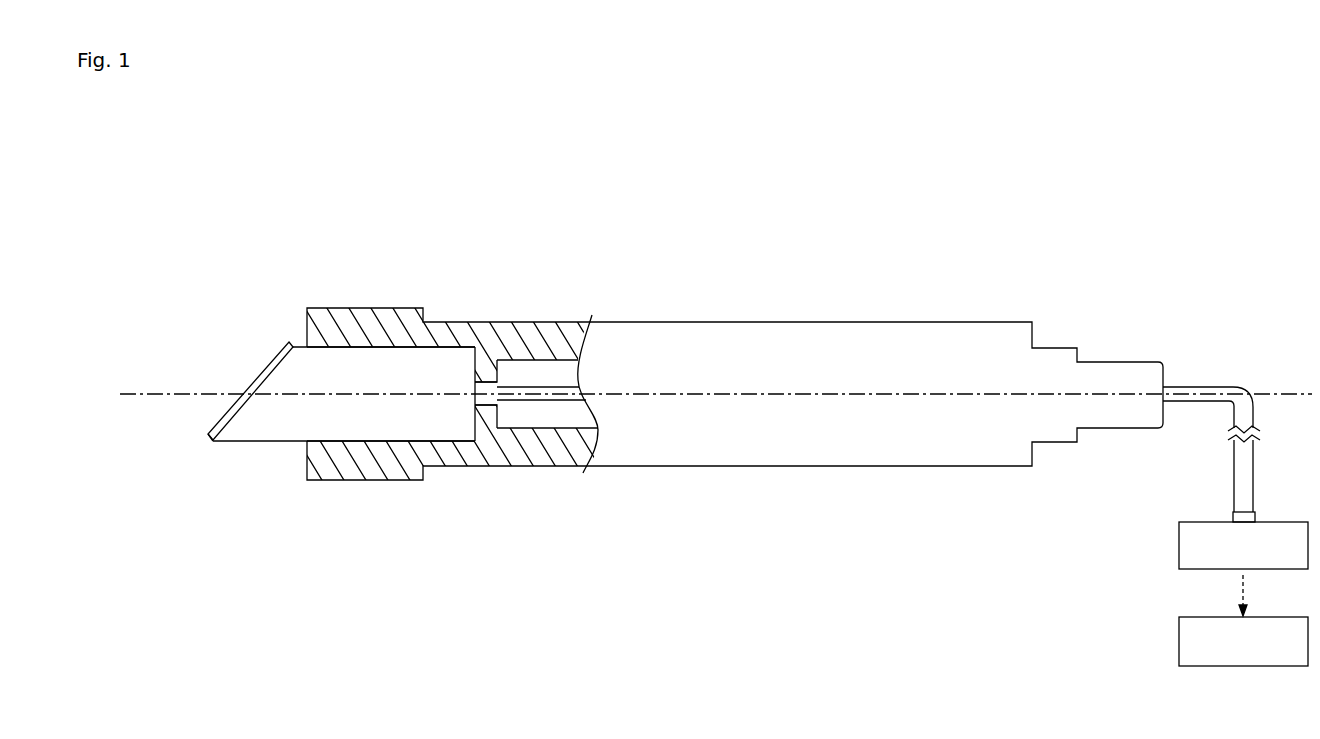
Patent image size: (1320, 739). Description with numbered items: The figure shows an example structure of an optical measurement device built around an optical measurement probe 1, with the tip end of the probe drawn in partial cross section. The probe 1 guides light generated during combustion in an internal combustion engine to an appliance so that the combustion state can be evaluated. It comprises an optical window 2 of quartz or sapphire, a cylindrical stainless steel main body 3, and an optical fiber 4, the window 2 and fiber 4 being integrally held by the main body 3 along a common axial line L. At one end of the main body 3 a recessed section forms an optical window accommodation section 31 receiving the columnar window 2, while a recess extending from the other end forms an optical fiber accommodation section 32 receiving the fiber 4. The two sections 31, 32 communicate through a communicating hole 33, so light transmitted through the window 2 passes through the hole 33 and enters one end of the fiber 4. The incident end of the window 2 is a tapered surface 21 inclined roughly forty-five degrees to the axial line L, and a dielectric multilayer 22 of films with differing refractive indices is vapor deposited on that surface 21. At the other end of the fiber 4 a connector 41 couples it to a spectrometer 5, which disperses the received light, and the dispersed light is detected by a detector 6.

The optical measurement probe 1 is at (820, 276).
The optical window 2 is at (299, 431).
The tapered surface 21 is at (267, 370).
The dielectric multilayer 22 is at (210, 429).
The main body 3 is at (685, 322).
The optical window accommodation section 31 is at (458, 352).
The optical fiber accommodation section 32 is at (515, 362).
The communicating hole 33 is at (493, 404).
The optical fiber 4 is at (550, 400).
The connector 41 is at (1232, 515).
The spectrometer 5 is at (1178, 545).
The detector 6 is at (1178, 642).
The axial line L is at (1289, 393).